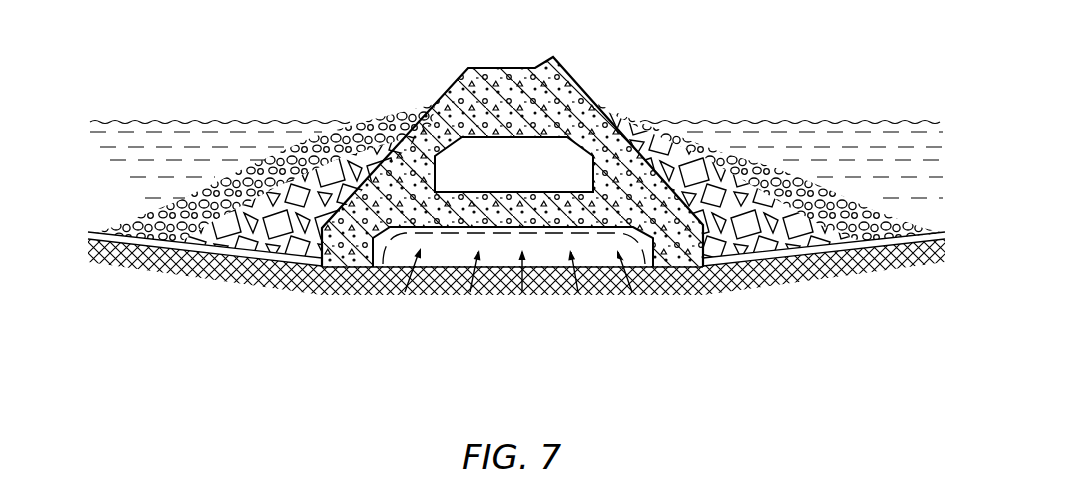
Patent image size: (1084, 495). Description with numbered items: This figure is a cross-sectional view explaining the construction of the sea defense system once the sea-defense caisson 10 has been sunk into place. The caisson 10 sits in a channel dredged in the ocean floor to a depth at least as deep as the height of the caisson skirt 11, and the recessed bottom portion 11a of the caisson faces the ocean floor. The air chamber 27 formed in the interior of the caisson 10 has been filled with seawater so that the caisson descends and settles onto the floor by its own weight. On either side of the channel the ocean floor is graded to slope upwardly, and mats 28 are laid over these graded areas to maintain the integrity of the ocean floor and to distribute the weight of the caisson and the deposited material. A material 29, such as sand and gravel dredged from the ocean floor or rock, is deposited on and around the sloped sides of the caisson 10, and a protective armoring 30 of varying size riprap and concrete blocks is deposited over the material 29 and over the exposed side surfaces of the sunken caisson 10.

The sea-defense caisson 10 is at (447, 84).
The air chamber 27 is at (553, 152).
The protective armoring 30 is at (312, 150).
The material 29 is at (227, 247).
The mat 28 is at (763, 262).
The caisson skirt 11 is at (673, 252).
The recessed bottom portion 11a is at (528, 240).